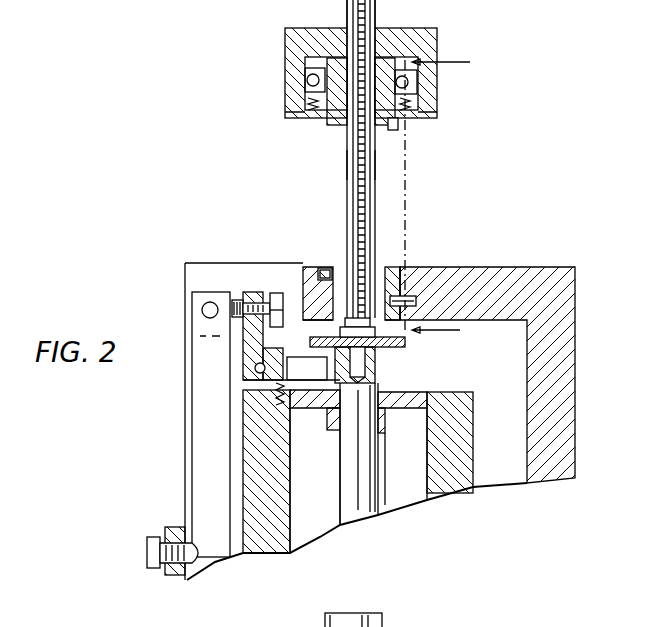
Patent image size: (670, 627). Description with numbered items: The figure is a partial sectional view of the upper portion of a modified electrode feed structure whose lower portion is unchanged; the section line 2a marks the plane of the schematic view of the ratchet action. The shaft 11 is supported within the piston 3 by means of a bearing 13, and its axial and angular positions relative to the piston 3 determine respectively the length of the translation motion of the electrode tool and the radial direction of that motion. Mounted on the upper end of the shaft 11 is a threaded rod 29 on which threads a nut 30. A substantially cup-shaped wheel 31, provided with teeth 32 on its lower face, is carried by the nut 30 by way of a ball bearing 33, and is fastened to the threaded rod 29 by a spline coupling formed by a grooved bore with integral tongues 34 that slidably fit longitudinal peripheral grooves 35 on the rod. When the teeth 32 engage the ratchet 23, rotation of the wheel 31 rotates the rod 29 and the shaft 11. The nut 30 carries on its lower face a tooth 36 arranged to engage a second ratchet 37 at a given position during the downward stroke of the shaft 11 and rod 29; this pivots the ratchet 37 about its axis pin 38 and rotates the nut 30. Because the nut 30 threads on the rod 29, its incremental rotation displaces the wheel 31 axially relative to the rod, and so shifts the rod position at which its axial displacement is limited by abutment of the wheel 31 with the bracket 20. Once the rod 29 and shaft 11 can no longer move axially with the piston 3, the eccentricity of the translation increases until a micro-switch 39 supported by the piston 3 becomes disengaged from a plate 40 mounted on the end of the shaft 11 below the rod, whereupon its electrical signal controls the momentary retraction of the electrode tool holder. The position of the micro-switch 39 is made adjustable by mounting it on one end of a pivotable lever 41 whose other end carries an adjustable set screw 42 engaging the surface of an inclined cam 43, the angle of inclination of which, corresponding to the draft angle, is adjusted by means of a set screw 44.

The section line 2a is at (455, 209).
The piston 3 is at (468, 412).
The shaft 11 is at (360, 490).
The bearing 13 is at (386, 440).
The bracket 20 is at (552, 286).
The ratchet 23 is at (325, 267).
The threaded rod 29 is at (372, 196).
The nut 30 is at (336, 126).
The wheel 31 is at (438, 40).
The teeth 32 is at (288, 118).
The ball bearing 33 is at (302, 80).
The tongues 34 is at (378, 30).
The longitudinal peripheral grooves 35 is at (352, 165).
The tooth 36 is at (400, 128).
The second ratchet 37 is at (396, 278).
The axis pin 38 is at (454, 270).
The micro-switch 39 is at (307, 370).
The plate 40 is at (398, 348).
The pivotable lever 41 is at (250, 336).
The adjustable set screw 42 is at (238, 298).
The inclined cam 43 is at (200, 407).
The set screw 44 is at (152, 537).